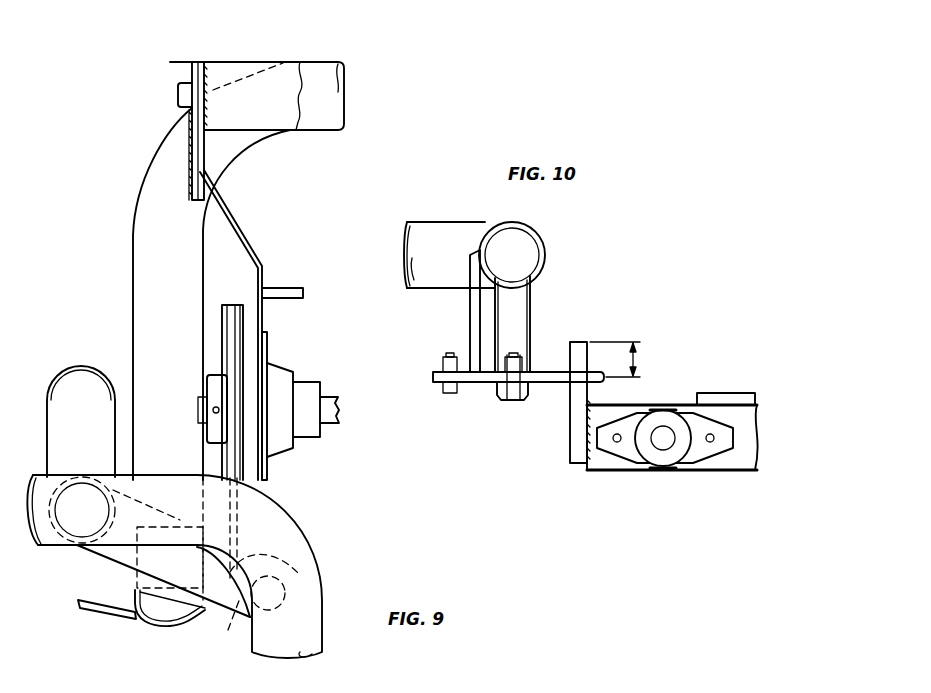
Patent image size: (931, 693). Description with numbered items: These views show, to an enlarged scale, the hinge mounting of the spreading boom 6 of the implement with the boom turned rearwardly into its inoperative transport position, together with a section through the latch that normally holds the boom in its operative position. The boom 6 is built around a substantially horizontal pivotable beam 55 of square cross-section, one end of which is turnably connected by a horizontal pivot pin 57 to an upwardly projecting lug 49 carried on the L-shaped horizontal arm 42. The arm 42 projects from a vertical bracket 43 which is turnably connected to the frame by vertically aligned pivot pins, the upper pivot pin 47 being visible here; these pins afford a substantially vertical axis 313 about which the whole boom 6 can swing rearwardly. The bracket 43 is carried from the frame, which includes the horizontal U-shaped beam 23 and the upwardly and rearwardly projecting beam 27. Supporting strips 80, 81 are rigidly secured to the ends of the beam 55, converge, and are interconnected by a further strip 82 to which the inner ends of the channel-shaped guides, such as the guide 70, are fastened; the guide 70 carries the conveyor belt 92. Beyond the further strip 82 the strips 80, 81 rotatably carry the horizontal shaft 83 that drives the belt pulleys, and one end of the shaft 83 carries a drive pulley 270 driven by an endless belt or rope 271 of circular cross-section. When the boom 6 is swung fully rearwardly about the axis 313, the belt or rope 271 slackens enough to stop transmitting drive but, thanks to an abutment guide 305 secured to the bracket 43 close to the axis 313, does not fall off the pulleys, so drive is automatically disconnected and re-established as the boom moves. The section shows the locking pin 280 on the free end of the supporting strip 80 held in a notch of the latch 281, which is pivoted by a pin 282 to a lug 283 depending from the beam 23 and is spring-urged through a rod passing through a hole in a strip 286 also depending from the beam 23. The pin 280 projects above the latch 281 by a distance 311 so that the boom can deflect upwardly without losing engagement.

In FIG. 9, the spreading boom 6 is at (350, 106).
In FIG. 9, the lug 49 is at (172, 61).
In FIG. 9, the pivot pin 57 is at (176, 92).
In FIG. 9, the pivotable beam 55 is at (238, 62).
In FIG. 9, the arm 42 is at (133, 255).
In FIG. 9, the supporting strip 81 is at (248, 250).
In FIG. 9, the further strip 82 is at (295, 287).
In FIG. 9, the drive pulley 270 is at (215, 304).
In FIG. 9, the shaft 83 is at (339, 410).
In FIG. 10, the shaft 83 is at (664, 428).
In FIG. 9, the beam 27 is at (84, 376).
In FIG. 9, the U-shaped beam 23 is at (285, 532).
In FIG. 10, the U-shaped beam 23 is at (436, 230).
In FIG. 9, the upper pivot pin 47 is at (288, 574).
In FIG. 9, the bracket 43 is at (118, 548).
In FIG. 9, the abutment guide 305 is at (156, 626).
In FIG. 9, the endless belt or rope 271 is at (100, 612).
In FIG. 9, the substantially vertical axis 313 is at (218, 628).
In FIG. 10, the strip 286 is at (520, 312).
In FIG. 10, the lug 283 is at (470, 318).
In FIG. 10, the latch 281 is at (475, 384).
In FIG. 10, the pin 282 is at (445, 388).
In FIG. 10, the locking pin 280 is at (580, 348).
In FIG. 10, the distance 311 is at (642, 356).
In FIG. 10, the supporting strip 80 is at (604, 464).
In FIG. 10, the channel-shaped guide 70 is at (724, 393).
In FIG. 10, the conveyor belt 92 is at (690, 474).